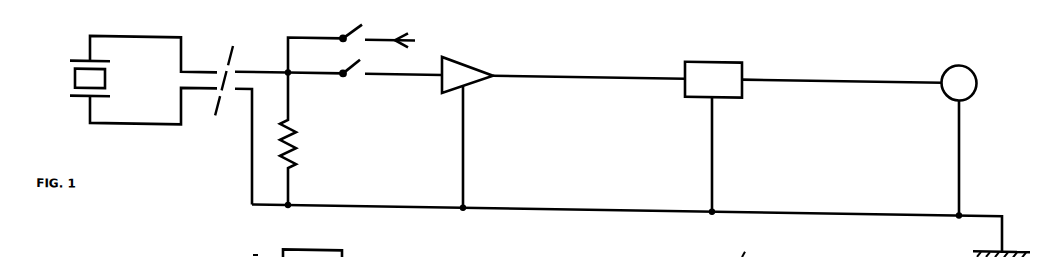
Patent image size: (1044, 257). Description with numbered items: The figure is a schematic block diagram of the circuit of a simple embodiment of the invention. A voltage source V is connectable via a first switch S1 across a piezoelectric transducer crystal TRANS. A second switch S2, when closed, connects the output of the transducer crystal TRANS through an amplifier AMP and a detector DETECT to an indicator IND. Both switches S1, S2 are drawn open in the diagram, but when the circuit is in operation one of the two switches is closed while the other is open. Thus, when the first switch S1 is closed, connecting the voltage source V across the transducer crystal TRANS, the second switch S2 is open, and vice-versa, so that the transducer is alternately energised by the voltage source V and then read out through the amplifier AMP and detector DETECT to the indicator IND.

The piezoelectric transducer crystal TRANS is at (124, 80).
The first switch S1 is at (325, 44).
The second switch S2 is at (324, 64).
The voltage source V is at (395, 40).
The amplifier AMP is at (432, 132).
The detector DETECT is at (617, 127).
The indicator IND is at (859, 132).